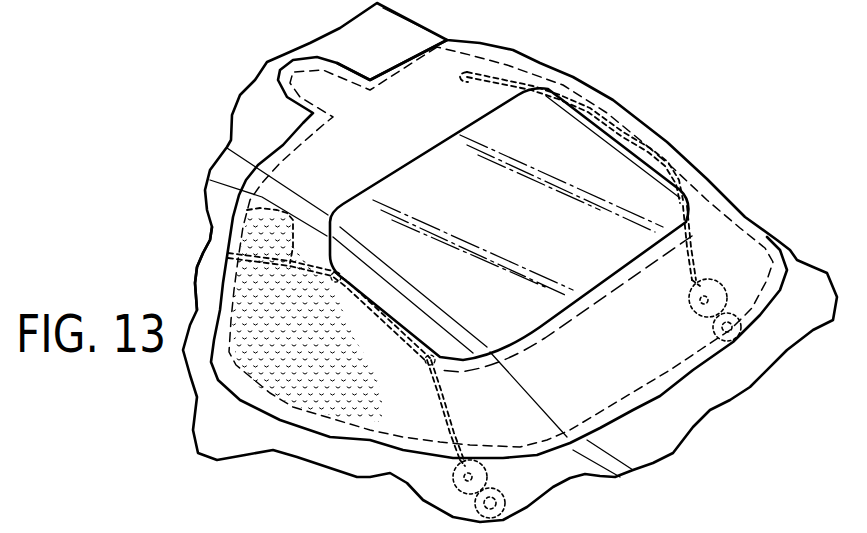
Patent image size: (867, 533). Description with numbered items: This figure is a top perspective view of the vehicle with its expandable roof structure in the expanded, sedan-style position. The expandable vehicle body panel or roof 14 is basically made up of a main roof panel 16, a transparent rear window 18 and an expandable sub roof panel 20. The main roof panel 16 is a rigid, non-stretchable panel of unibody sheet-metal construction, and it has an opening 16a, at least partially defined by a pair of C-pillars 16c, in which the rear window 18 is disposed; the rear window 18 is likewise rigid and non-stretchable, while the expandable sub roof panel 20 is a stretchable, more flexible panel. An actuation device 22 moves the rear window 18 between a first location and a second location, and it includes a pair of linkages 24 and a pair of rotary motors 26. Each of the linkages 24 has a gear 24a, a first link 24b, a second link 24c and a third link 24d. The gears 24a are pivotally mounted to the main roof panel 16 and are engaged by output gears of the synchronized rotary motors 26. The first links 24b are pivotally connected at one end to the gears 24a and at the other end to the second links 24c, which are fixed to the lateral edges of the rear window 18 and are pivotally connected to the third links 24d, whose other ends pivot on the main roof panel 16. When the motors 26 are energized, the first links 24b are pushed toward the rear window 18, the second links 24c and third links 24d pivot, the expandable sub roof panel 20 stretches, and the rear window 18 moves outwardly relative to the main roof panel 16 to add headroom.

The expandable vehicle body panel or roof 14 is at (680, 140).
The main roof panel 16 is at (353, 47).
The opening 16a is at (284, 396).
The C-pillars 16c is at (207, 270).
The transparent rear window 18 is at (612, 160).
The expandable sub roof panel 20 is at (435, 80).
The actuation device 22 is at (740, 273).
The linkages 24 is at (458, 407).
The gear 24a is at (693, 315).
The first link 24b is at (707, 240).
The second link 24c is at (600, 107).
The third link 24d is at (505, 78).
The rotary motors 26 is at (735, 312).